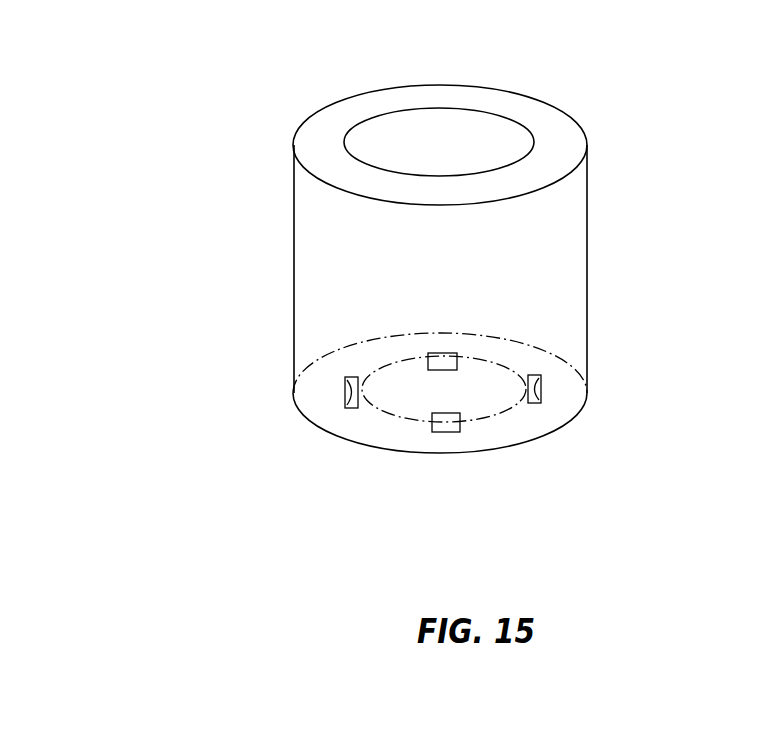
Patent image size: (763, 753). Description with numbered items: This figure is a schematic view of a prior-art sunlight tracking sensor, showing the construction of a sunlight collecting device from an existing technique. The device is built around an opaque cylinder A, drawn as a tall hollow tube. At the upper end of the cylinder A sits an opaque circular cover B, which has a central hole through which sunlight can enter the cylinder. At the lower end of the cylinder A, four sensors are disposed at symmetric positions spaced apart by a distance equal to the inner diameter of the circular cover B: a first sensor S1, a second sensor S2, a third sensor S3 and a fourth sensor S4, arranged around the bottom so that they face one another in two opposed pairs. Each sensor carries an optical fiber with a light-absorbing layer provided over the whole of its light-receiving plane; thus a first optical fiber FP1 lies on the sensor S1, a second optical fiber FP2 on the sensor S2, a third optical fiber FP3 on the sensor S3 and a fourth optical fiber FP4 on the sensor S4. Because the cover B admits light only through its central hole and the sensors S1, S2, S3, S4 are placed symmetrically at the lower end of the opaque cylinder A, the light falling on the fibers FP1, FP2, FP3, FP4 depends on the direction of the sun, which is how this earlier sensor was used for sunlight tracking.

The opaque cylinder A is at (410, 269).
The opaque circular cover B is at (414, 112).
The sensor S1 is at (276, 429).
The optical fiber with light-absorbing layer FP1 is at (351, 392).
The sensor S2 is at (493, 319).
The optical fiber with light-absorbing layer FP2 is at (442, 361).
The sensor S3 is at (625, 356).
The optical fiber with light-absorbing layer FP3 is at (534, 389).
The sensor S4 is at (524, 452).
The optical fiber with light-absorbing layer FP4 is at (446, 422).